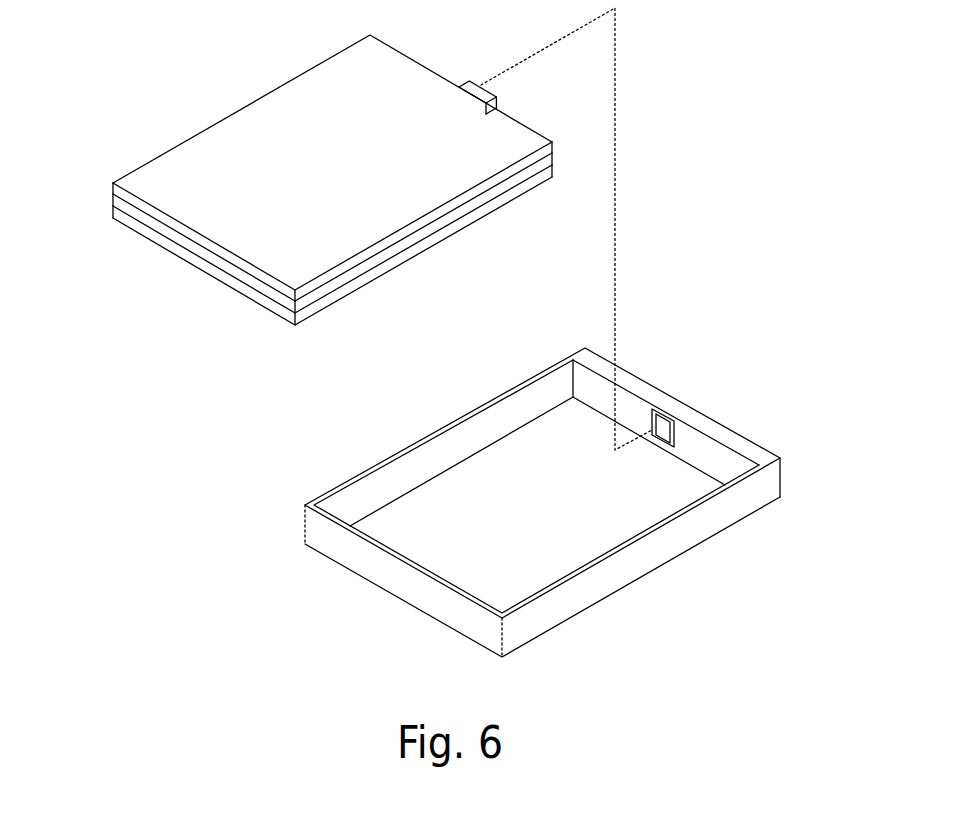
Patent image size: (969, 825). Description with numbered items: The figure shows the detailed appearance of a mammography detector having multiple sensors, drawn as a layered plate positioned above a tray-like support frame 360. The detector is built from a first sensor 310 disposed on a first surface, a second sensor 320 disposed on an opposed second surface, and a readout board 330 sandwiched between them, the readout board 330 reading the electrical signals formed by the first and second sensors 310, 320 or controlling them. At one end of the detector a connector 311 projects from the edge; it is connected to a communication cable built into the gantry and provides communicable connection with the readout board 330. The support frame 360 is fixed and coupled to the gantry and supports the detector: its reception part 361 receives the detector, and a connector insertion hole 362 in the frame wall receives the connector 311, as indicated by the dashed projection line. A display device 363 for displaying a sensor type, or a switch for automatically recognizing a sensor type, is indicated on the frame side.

The first sensor 310 is at (113, 185).
The connector 311 is at (465, 79).
The second sensor 320 is at (113, 213).
The readout board 330 is at (113, 200).
The support frame 360 is at (781, 478).
The reception part 361 is at (443, 490).
The connector insertion hole 362 is at (670, 437).
The display device 363 is at (752, 443).